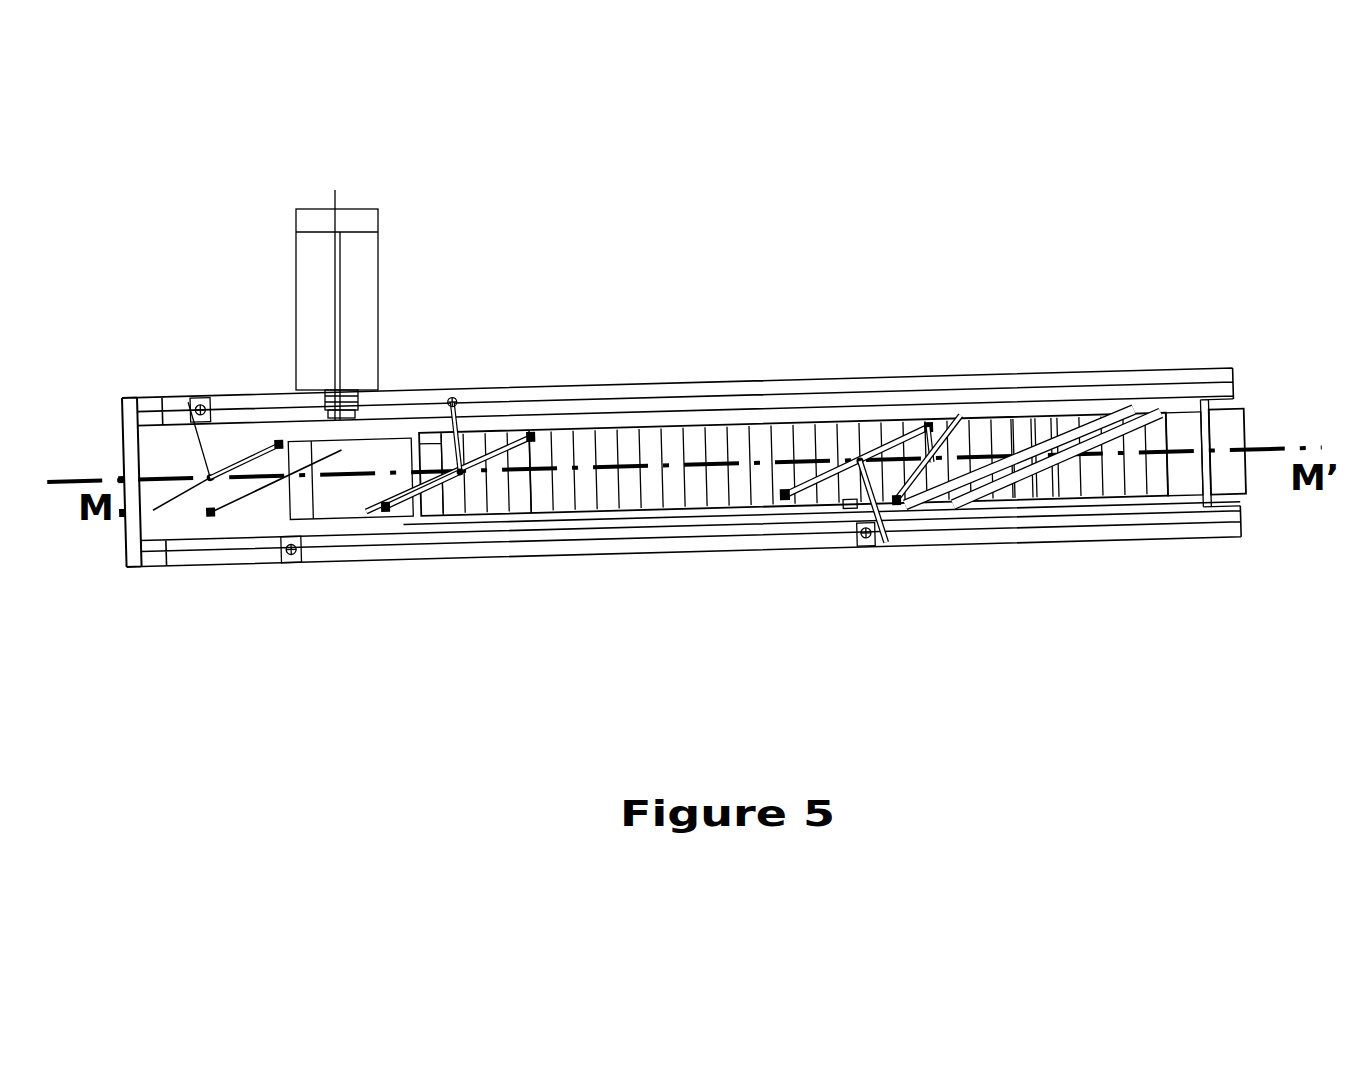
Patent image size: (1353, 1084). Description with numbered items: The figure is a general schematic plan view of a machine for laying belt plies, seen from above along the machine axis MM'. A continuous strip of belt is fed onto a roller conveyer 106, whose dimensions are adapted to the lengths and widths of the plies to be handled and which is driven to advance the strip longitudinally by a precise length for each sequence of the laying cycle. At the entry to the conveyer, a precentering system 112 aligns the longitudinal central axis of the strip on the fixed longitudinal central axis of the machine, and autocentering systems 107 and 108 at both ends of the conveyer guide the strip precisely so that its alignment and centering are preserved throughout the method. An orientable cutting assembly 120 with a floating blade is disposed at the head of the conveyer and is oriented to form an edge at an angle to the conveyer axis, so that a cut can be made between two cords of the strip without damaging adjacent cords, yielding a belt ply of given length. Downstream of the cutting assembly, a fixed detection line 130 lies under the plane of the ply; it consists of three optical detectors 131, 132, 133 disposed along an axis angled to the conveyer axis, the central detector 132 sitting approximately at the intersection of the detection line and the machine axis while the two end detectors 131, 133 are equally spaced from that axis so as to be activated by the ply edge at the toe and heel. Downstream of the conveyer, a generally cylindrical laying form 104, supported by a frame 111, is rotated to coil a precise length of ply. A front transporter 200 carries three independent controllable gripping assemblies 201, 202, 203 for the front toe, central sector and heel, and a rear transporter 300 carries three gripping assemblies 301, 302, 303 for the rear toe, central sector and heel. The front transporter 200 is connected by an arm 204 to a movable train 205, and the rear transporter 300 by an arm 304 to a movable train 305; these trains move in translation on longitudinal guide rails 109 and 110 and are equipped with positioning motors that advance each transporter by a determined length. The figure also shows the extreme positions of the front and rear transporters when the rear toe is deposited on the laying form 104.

The laying form 104 is at (337, 498).
The roller conveyer 106 is at (625, 447).
The autocentering system 107 is at (1183, 428).
The autocentering system 108 is at (437, 447).
The longitudinal guide rail 109 is at (583, 542).
The longitudinal guide rail 110 is at (533, 407).
The frame 111 is at (312, 325).
The precentering system 112 is at (1217, 427).
The orientable cutting assembly 120 is at (1085, 428).
The fixed detection line 130 is at (1003, 546).
The optical detector 131 is at (896, 503).
The central optical detector 132 is at (916, 490).
The optical detector 133 is at (965, 480).
The front transporter 200 is at (488, 483).
The gripping assembly 201 is at (380, 505).
The gripping assembly 202 is at (472, 500).
The gripping assembly 203 is at (537, 493).
The arm 204 is at (458, 437).
The movable train 205 is at (452, 397).
The rear transporter 300 is at (822, 462).
The gripping assembly 301 is at (930, 482).
The gripping assembly 302 is at (862, 478).
The gripping assembly 303 is at (782, 478).
The arm 304 is at (850, 507).
The movable train 305 is at (852, 547).